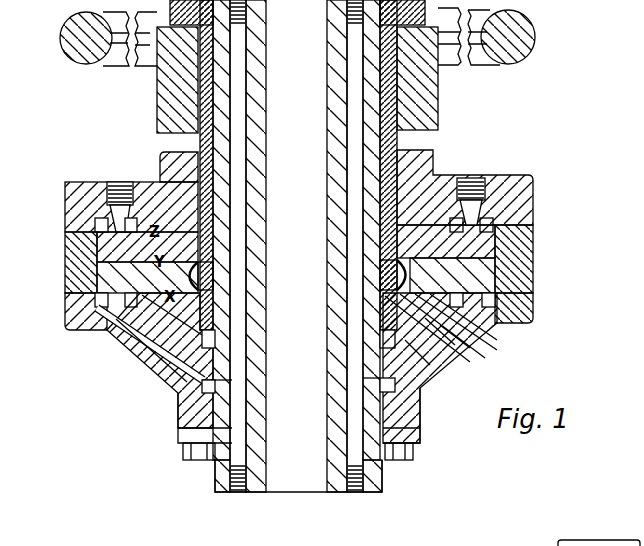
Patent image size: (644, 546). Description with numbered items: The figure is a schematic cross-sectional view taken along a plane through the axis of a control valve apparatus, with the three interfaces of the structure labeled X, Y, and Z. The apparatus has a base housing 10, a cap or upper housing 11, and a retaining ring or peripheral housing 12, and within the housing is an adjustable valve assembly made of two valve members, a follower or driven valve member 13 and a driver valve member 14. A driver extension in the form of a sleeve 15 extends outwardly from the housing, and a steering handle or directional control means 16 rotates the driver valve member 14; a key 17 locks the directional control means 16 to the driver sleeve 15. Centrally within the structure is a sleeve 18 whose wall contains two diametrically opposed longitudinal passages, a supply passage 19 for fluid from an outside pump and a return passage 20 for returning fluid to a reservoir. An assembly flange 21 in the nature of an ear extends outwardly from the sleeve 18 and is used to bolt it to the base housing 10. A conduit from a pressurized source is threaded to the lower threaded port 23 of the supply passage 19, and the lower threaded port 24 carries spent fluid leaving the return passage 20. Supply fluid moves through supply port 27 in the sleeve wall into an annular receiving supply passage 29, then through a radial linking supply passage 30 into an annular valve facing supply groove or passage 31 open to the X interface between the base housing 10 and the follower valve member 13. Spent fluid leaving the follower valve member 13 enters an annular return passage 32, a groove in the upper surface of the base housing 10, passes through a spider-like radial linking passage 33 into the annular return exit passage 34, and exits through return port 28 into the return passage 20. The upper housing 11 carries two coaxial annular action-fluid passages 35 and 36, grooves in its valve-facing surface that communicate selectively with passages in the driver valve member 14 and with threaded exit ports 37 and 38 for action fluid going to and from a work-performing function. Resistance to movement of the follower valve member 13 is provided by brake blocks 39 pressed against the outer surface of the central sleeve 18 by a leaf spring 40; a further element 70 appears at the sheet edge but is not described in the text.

The base housing 10 is at (72, 320).
The cap or upper housing 11 is at (75, 215).
The retaining ring or peripheral housing 12 is at (75, 275).
The follower or driven valve member 13 is at (140, 287).
The driver valve member 14 is at (121, 251).
The driver sleeve 15 is at (200, 118).
The steering handle or directional control means 16 is at (85, 53).
The key 17 is at (200, 70).
The central sleeve 18 is at (254, 164).
The supply passage 19 is at (355, 60).
The return passage 20 is at (237, 117).
The assembly flange 21 is at (185, 435).
The lower threaded port 23 is at (350, 493).
The lower threaded port 24 is at (233, 493).
The supply port 27 is at (378, 343).
The return port 28 is at (232, 392).
The annular receiving supply passage 29 is at (437, 345).
The radial linking supply passage 30 is at (452, 338).
The annular valve facing supply groove or passage 31 is at (493, 330).
The annular return passage 32 is at (490, 298).
The radial linking passage 33 is at (417, 360).
The annular return exit passage 34 is at (420, 408).
The annular action-fluid passage 35 is at (495, 222).
The annular action-fluid passage 36 is at (153, 182).
The exit port 37 is at (478, 182).
The exit port 38 is at (120, 182).
The resistance blocks or brake blocks 39 is at (383, 276).
The leaf spring 40 is at (383, 314).
The housing 70 is at (625, 543).